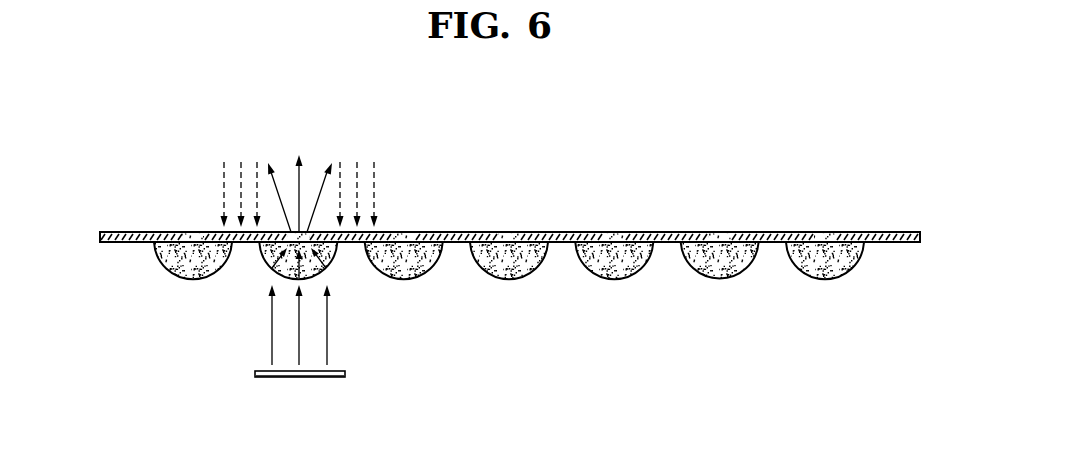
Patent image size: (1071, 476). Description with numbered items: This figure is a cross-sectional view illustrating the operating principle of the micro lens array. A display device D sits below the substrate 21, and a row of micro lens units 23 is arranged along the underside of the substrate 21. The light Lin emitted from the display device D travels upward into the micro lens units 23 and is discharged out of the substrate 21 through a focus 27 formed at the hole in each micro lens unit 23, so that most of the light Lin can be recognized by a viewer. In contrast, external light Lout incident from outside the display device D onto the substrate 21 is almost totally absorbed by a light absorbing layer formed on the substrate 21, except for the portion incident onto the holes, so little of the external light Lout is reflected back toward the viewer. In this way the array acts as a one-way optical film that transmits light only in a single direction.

The substrate 21 is at (100, 236).
The micro lens unit 23 is at (175, 272).
The focus 27 is at (190, 236).
The display device D is at (346, 374).
The light emitted from the display device Lin is at (318, 325).
The external light Lout is at (313, 182).